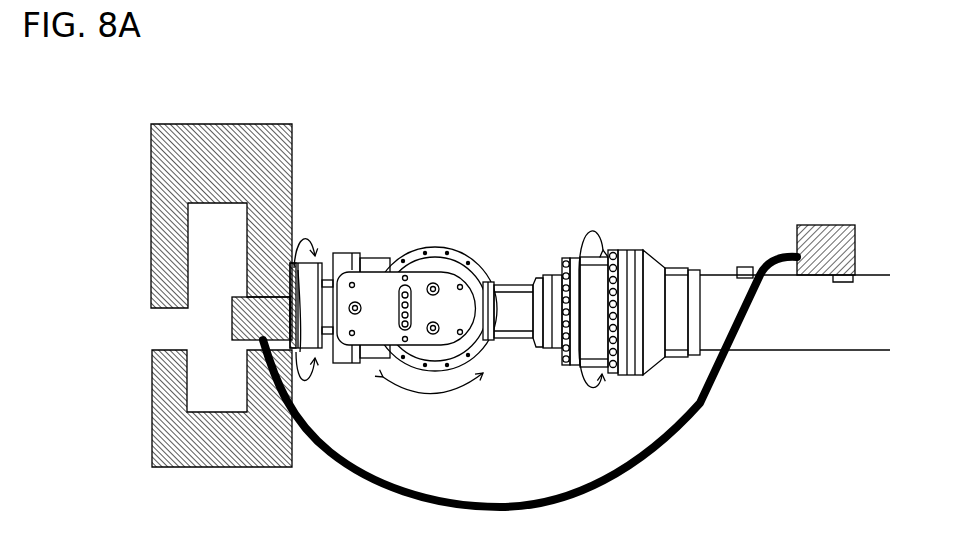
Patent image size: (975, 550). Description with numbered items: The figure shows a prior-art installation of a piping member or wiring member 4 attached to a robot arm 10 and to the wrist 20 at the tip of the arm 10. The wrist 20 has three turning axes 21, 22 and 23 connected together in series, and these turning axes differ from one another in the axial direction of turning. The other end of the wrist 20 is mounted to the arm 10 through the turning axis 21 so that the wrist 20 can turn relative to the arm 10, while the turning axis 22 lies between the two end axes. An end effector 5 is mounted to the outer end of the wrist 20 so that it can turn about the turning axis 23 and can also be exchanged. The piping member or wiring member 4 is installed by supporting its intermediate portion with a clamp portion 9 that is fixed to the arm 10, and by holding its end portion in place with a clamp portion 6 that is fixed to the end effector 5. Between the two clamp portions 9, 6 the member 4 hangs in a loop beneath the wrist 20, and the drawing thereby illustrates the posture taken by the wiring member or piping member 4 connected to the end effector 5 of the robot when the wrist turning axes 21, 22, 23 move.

The cable 4 is at (655, 468).
The end effector 5 is at (265, 140).
The clamp portion 6 is at (285, 298).
The clamp portion 9 is at (820, 237).
The arm 10 is at (812, 345).
The wrist 20 is at (513, 410).
The turning axis 21 is at (560, 252).
The turning axis 22 is at (440, 270).
The turning axis 23 is at (328, 262).